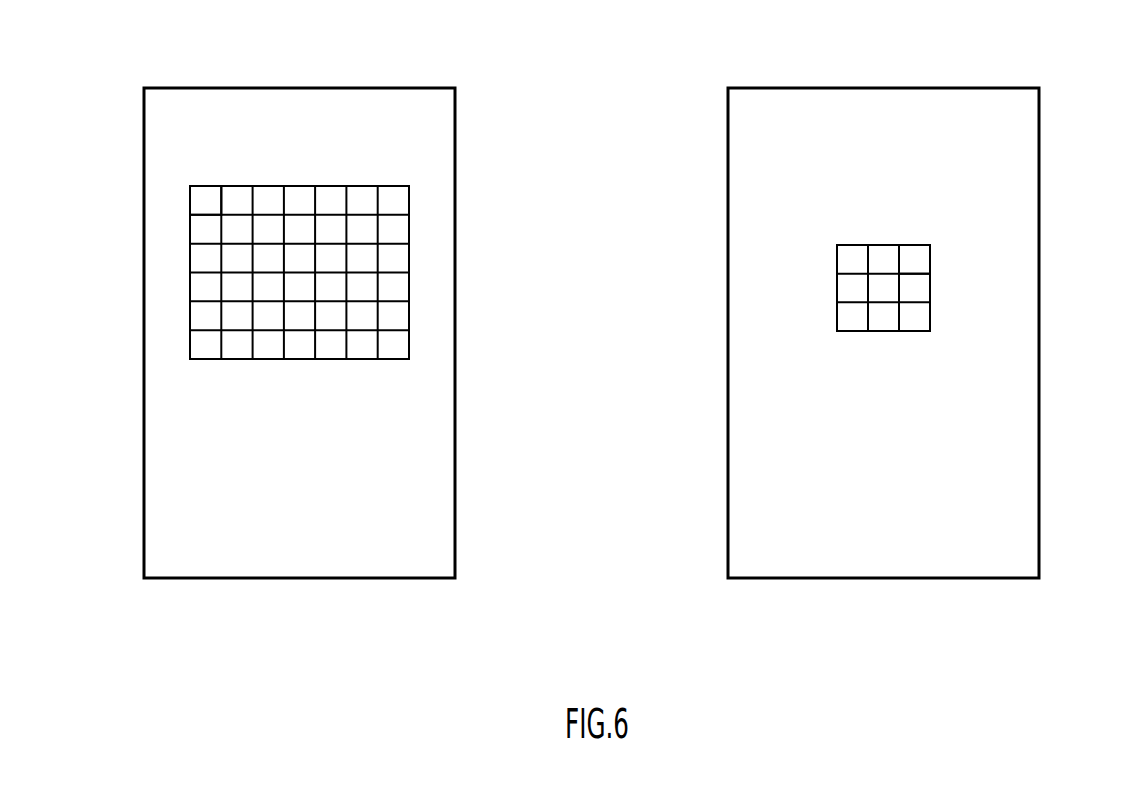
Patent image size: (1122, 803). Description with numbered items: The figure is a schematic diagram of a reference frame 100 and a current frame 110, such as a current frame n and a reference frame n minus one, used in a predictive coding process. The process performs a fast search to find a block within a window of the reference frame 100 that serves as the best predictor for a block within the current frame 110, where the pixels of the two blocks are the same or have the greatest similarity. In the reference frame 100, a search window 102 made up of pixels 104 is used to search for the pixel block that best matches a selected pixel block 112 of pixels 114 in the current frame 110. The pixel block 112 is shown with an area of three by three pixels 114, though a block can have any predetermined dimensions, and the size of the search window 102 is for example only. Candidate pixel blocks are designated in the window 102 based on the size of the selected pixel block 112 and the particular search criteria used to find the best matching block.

The reference frame 100 is at (390, 68).
The search window 102 is at (330, 186).
The pixels 104 is at (197, 202).
The current frame 110 is at (843, 72).
The pixel block 112 is at (931, 317).
The pixels 114 is at (917, 257).